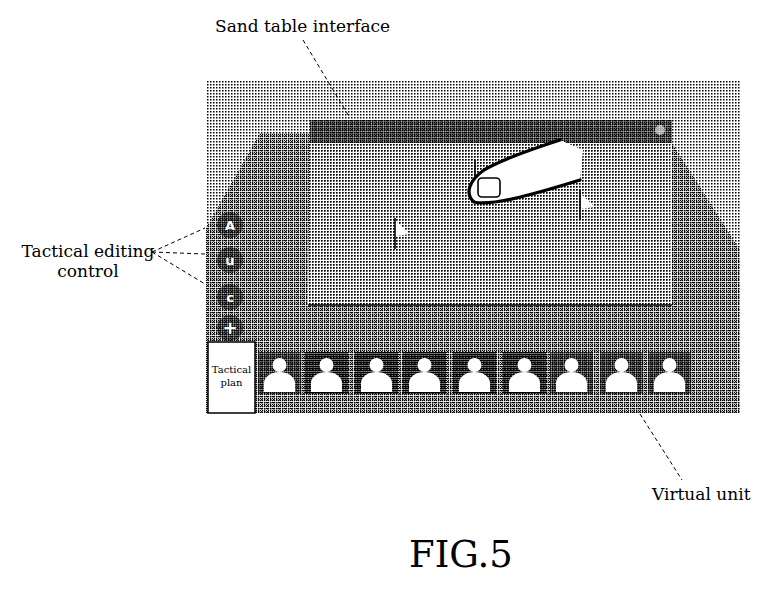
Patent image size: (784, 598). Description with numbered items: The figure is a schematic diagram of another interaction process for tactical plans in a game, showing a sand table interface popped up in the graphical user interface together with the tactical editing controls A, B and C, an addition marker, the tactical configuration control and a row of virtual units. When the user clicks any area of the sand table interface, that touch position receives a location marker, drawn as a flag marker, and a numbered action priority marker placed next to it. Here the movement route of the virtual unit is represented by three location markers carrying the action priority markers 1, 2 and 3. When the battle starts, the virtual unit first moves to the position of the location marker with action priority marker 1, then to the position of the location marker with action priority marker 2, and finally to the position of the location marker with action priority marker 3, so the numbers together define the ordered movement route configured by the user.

The action priority marker 1 is at (393, 233).
The action priority marker 2 is at (578, 207).
The action priority marker 3 is at (465, 175).